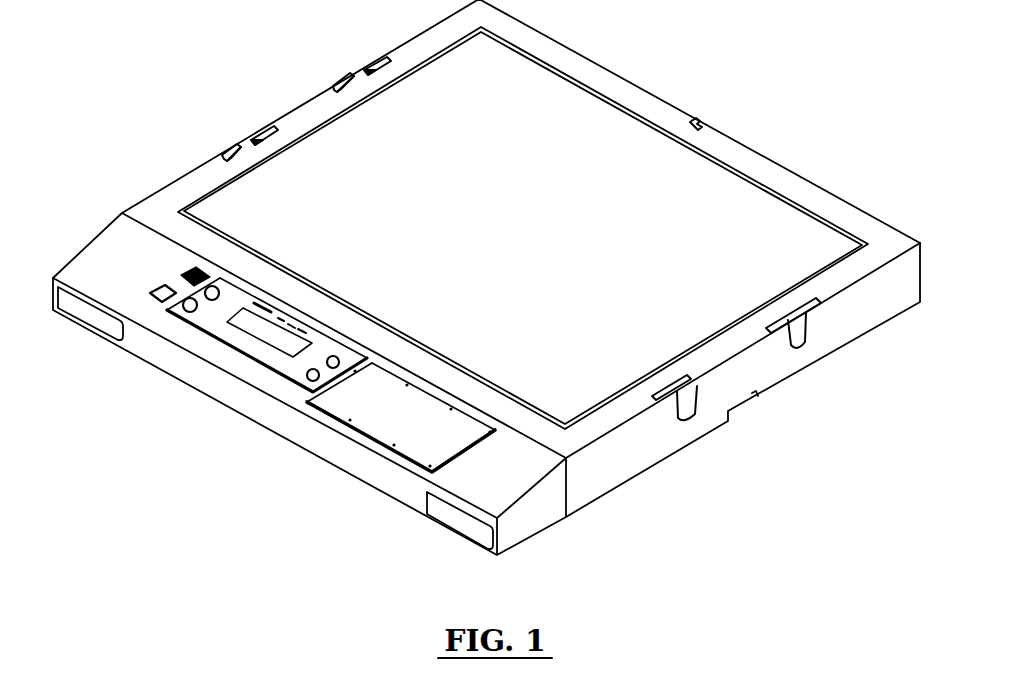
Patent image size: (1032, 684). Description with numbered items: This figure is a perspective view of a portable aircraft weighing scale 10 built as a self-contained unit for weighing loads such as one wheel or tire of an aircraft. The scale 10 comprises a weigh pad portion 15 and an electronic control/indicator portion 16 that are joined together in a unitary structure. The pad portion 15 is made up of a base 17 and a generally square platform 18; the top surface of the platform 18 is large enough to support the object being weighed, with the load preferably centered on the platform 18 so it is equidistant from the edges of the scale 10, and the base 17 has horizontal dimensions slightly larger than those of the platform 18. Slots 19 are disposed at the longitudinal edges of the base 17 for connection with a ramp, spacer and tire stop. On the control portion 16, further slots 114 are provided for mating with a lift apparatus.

The weighing scale 10 is at (738, 90).
The weigh pad portion 15 is at (341, 70).
The electronic control/indicator portion 16 is at (81, 235).
The base 17 is at (885, 238).
The platform 18 is at (647, 268).
The slots 19 is at (258, 126).
The slots 114 is at (81, 338).